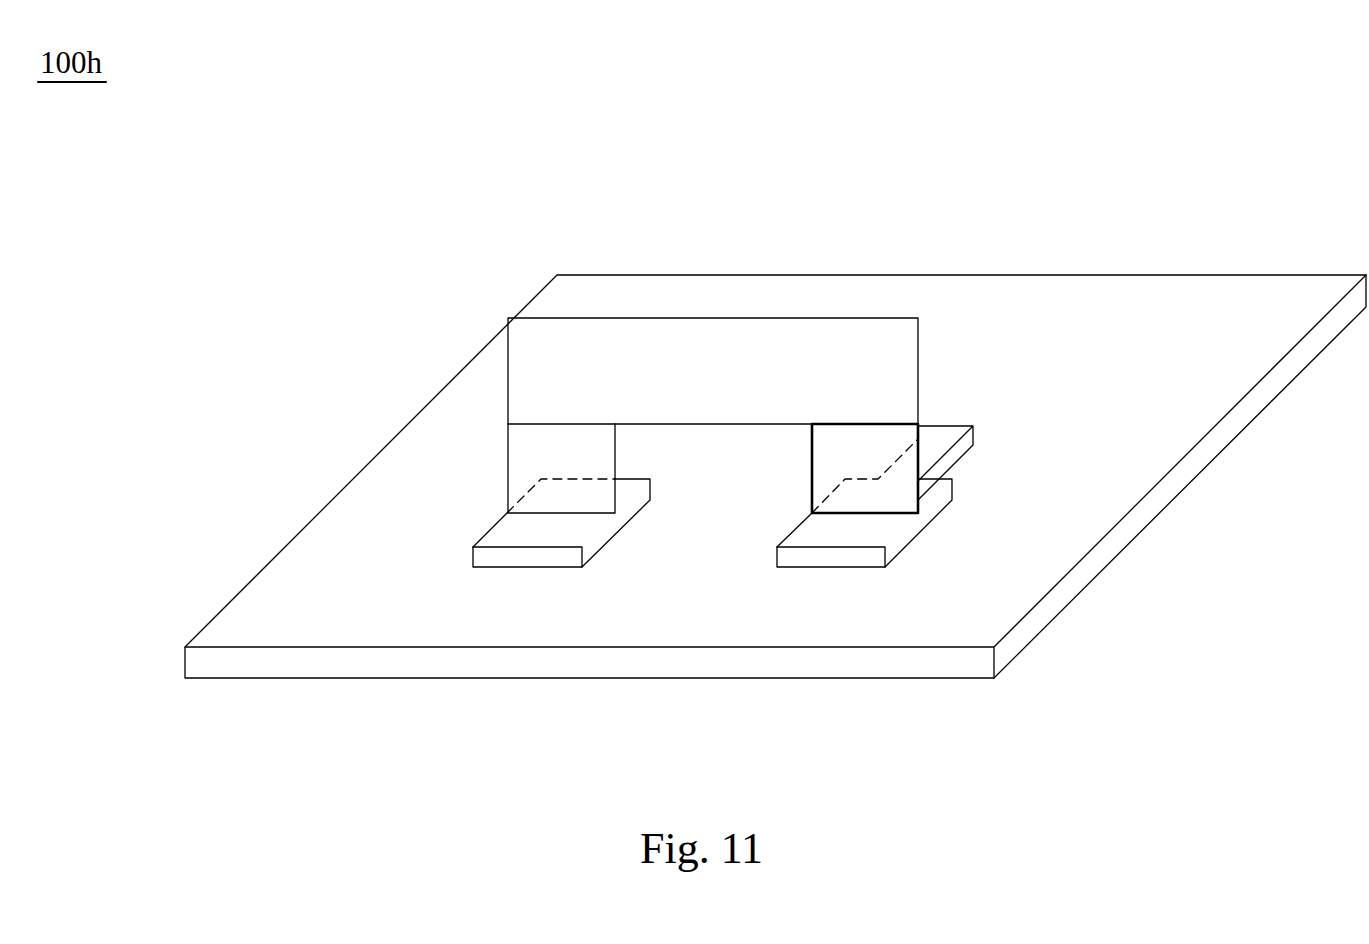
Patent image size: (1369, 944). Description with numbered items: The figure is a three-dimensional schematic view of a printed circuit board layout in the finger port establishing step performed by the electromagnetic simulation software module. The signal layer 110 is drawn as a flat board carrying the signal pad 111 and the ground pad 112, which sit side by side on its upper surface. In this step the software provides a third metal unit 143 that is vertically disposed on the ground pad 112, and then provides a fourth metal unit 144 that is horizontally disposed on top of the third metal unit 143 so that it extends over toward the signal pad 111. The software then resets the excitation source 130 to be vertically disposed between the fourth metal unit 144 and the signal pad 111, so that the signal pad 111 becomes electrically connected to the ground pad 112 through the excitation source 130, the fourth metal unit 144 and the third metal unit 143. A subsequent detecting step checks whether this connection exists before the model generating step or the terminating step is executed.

The signal layer 110 is at (293, 590).
The signal pad 111 is at (887, 527).
The ground pad 112 is at (508, 533).
The excitation source 130 is at (918, 458).
The third metal unit 143 is at (538, 452).
The fourth metal unit 144 is at (658, 340).